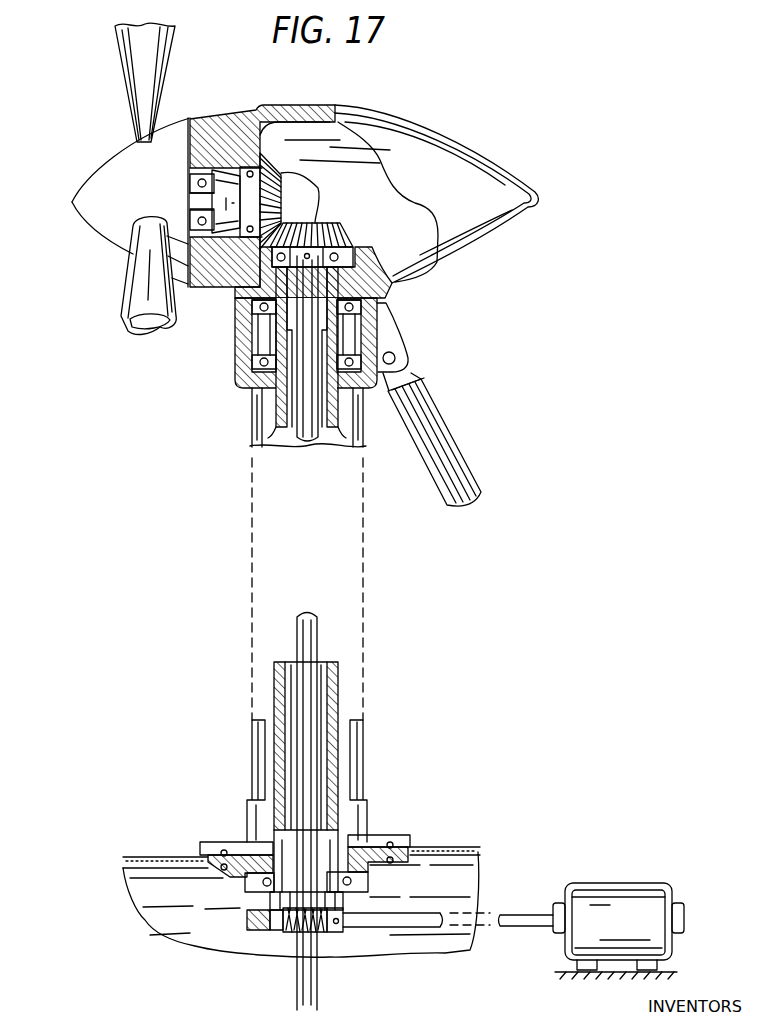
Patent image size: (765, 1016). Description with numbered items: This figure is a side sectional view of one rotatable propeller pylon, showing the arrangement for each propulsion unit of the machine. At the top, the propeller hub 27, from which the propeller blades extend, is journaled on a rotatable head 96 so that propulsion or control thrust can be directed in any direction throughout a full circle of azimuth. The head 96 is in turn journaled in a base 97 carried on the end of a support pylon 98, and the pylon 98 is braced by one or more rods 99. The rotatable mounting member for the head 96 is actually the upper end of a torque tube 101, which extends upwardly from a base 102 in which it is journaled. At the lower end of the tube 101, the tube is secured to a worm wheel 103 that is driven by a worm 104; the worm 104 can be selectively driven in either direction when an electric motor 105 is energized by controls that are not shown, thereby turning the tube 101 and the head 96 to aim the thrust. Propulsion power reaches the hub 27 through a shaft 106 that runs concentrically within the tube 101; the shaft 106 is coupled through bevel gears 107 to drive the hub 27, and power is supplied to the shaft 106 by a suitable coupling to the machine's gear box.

The propeller hub 27 is at (96, 184).
The rotatable head 96 is at (262, 104).
The base 97 is at (242, 316).
The support pylon 98 is at (252, 436).
The rod 99 is at (463, 460).
The torque tube 101 is at (272, 425).
The base 102 is at (234, 860).
The worm wheel 103 is at (262, 930).
The worm 104 is at (341, 932).
The electric motor 105 is at (616, 895).
The shaft 106 is at (318, 436).
The bevel gears 107 is at (313, 210).